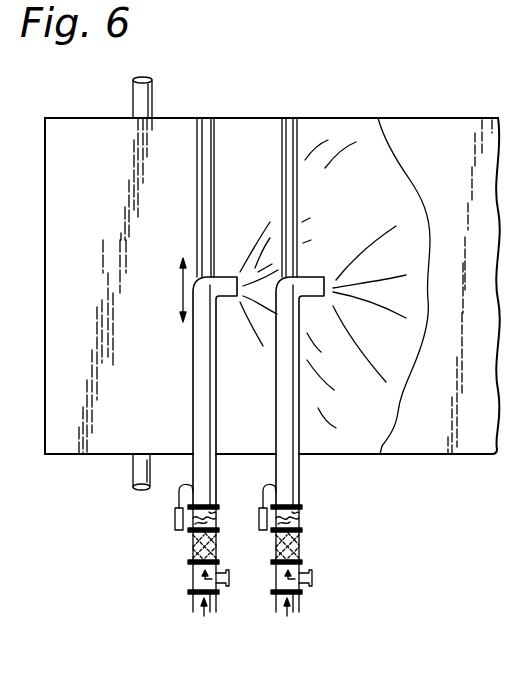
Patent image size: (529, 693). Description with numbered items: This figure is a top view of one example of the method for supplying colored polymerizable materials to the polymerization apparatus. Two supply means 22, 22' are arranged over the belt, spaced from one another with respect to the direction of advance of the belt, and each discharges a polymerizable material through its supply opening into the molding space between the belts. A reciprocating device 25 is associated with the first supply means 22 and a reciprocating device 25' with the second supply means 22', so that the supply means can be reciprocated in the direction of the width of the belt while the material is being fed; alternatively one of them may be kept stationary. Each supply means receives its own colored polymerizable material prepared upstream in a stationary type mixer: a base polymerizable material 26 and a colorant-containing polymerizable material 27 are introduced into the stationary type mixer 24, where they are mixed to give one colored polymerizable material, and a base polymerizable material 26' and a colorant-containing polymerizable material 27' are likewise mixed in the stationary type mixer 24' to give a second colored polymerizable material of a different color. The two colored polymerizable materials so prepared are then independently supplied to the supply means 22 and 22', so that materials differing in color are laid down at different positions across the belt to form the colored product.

The supply means 22 is at (224, 311).
The supply means 22' is at (312, 311).
The stationary type mixer 24 is at (176, 546).
The stationary type mixer 24' is at (310, 534).
The reciprocating device 25 is at (160, 513).
The reciprocating device 25' is at (251, 524).
The base polymerizable material 26 is at (232, 580).
The base polymerizable material 26' is at (322, 582).
The colorant-containing polymerizable material 27 is at (204, 623).
The colorant-containing polymerizable material 27' is at (288, 624).